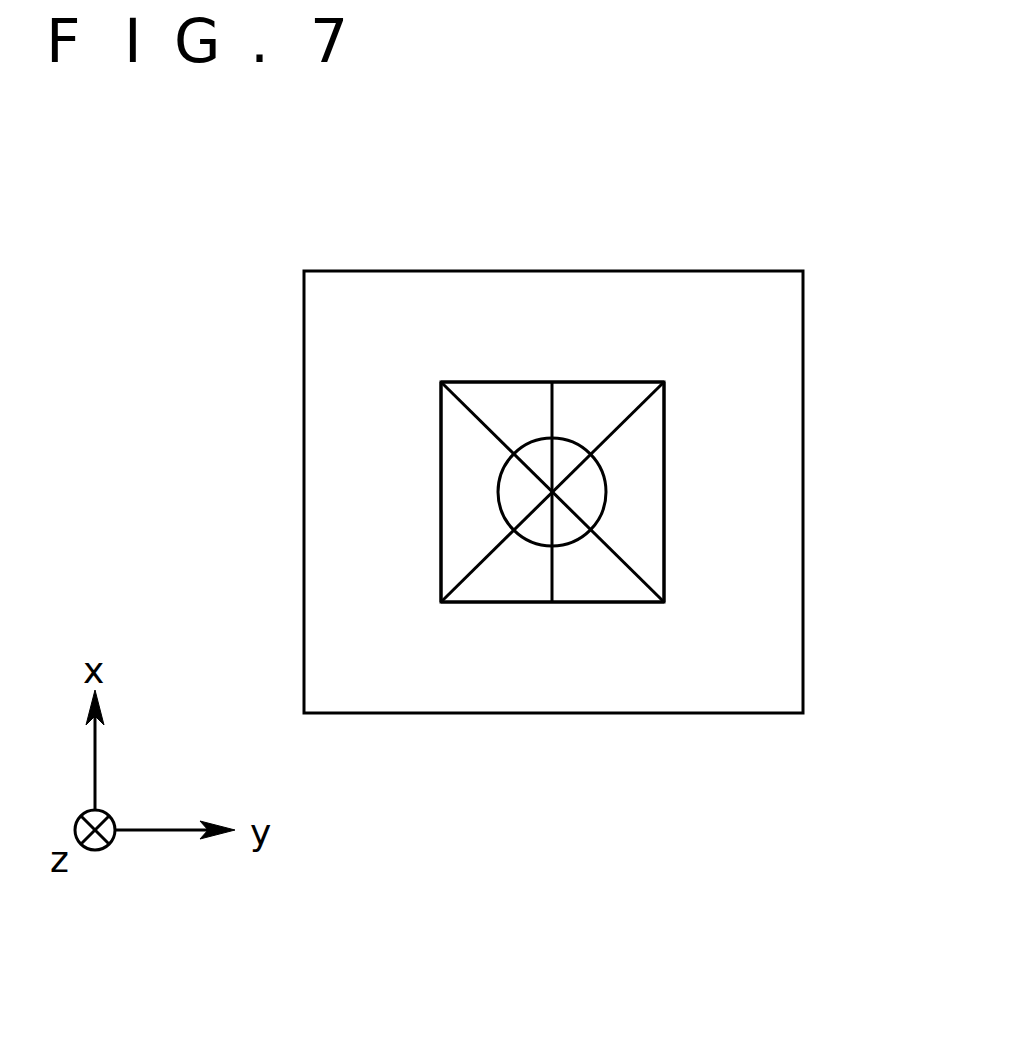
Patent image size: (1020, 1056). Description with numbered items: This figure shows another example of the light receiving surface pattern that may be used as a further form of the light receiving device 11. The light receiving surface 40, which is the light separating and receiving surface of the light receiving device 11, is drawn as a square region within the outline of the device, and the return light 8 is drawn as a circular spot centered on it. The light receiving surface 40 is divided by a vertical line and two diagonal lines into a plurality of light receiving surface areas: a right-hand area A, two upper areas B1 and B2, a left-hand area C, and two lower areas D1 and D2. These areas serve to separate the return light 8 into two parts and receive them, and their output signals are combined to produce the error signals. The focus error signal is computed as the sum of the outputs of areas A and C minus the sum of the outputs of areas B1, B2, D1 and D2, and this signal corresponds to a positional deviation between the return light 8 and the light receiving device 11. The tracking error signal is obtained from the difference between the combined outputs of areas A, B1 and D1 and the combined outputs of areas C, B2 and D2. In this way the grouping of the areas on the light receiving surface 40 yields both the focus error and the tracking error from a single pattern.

The light receiving device 11 is at (803, 648).
The light receiving surface 40 is at (522, 382).
The return light 8 is at (564, 437).
The light receiving surface area A is at (648, 484).
The light receiving surface area B1 is at (633, 395).
The light receiving surface area B2 is at (471, 392).
The light receiving surface area C is at (462, 492).
The light receiving surface area D1 is at (597, 583).
The light receiving surface area D2 is at (502, 583).